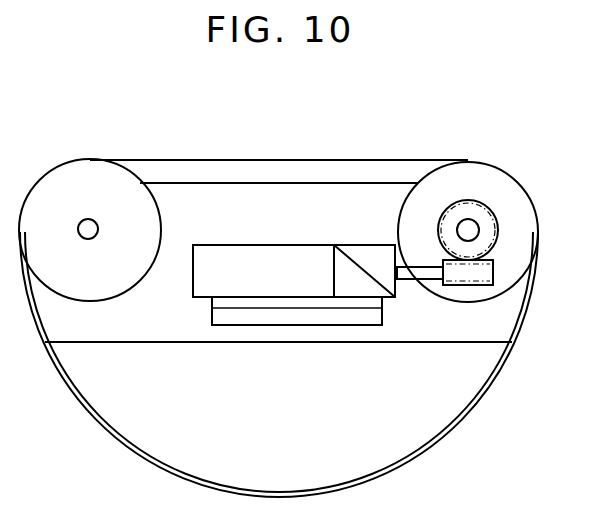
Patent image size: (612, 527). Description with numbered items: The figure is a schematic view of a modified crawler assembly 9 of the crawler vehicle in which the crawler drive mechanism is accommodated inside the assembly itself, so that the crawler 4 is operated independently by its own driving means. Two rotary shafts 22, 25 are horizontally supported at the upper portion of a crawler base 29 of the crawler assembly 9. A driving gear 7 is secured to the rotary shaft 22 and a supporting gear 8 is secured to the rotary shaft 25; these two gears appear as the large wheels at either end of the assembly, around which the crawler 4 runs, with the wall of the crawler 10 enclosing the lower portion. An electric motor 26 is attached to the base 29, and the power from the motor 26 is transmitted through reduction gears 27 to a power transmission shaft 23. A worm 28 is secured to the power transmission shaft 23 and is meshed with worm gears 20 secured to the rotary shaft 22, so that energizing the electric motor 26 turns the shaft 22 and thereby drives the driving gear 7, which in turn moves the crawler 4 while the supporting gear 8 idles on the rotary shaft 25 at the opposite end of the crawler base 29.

The crawler 4 is at (172, 474).
The driving gear 7 is at (467, 168).
The supporting gear 8 is at (92, 176).
The crawler assembly 9 is at (300, 156).
The inner housing wall 10 is at (402, 446).
The worm gears 20 is at (500, 222).
The rotary shaft 22 is at (466, 230).
The power transmission shaft 23 is at (413, 278).
The rotary shaft 25 is at (88, 239).
The electric motor 26 is at (267, 252).
The reduction gears 27 is at (362, 250).
The worm 28 is at (490, 273).
The crawler base 29 is at (508, 315).